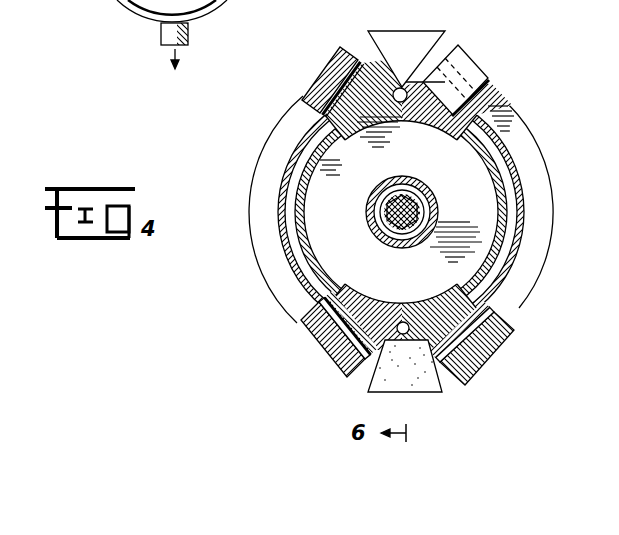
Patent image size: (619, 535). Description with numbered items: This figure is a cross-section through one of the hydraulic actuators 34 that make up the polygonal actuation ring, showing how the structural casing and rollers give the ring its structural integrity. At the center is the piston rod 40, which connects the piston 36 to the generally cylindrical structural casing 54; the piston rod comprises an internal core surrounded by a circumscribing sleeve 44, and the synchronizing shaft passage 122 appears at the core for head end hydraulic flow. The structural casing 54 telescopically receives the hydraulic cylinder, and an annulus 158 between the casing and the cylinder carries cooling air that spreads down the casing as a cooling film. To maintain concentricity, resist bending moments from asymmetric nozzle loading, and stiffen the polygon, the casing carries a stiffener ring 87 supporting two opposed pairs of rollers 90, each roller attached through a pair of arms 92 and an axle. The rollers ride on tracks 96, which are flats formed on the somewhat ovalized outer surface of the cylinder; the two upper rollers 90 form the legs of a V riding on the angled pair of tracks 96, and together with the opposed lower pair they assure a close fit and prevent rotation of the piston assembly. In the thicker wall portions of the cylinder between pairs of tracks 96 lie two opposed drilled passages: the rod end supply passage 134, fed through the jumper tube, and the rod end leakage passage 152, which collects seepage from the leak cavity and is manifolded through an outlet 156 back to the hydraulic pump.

The actuator 34 is at (545, 129).
The piston 36 is at (487, 220).
The piston rod 40 is at (309, 210).
The sleeve 44 is at (368, 212).
The structural casing 54 is at (520, 264).
The stiffener ring 87 is at (538, 171).
The roller 90 is at (328, 62).
The arm 92 is at (362, 48).
The track 96 is at (352, 106).
The longitudinally extending passage 122 is at (396, 219).
The longitudinally drilled passage 134 is at (402, 88).
The longitudinally drilled passage 152 is at (405, 334).
The outlet 156 is at (162, 47).
The annulus 158 is at (518, 239).